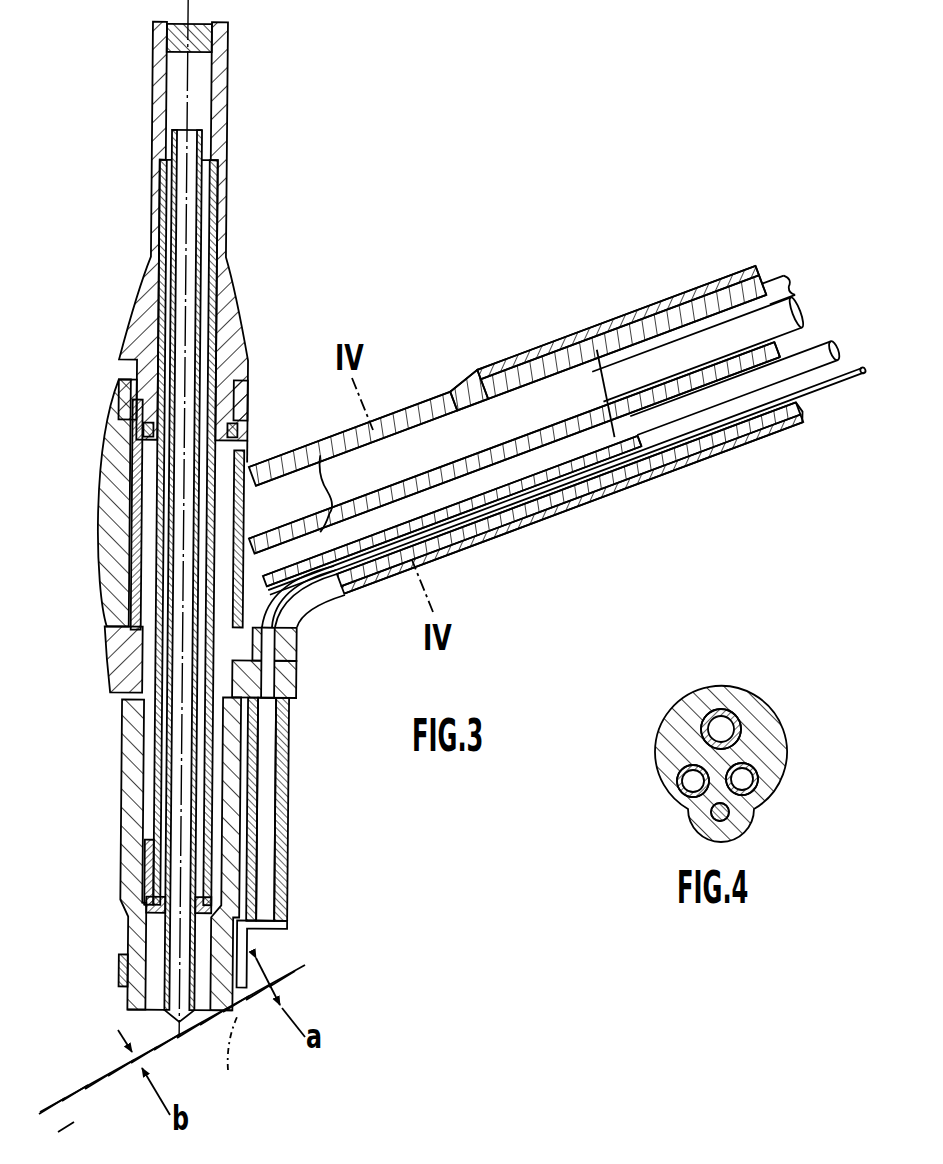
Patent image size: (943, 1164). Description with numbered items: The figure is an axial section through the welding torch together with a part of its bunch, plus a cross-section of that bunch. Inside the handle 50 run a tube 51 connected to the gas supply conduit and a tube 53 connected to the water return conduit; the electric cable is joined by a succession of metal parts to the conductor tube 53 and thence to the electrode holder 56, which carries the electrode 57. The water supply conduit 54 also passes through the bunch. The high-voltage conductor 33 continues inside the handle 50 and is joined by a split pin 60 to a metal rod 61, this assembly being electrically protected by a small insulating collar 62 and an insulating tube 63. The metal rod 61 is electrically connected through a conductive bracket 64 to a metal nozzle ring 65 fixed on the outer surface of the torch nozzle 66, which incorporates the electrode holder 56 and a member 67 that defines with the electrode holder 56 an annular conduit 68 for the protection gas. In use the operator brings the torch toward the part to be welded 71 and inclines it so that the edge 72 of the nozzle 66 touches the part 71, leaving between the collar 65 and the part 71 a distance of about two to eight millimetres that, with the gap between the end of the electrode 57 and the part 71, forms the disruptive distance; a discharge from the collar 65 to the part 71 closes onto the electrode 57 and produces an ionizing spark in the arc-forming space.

In FIG. 3, the high-voltage conductor 33 is at (668, 440).
In FIG. 4, the high-voltage conductor 33 is at (718, 816).
In FIG. 3, the handle 50 is at (635, 480).
In FIG. 3, the tube 51 is at (680, 350).
In FIG. 4, the tube 51 is at (723, 731).
In FIG. 3, the tube 53 is at (665, 417).
In FIG. 4, the tube 53 is at (746, 779).
In FIG. 4, the water supply conduit 54 is at (690, 783).
In FIG. 3, the electrode holder 56 is at (144, 543).
In FIG. 3, the electrode 57 is at (180, 905).
In FIG. 3, the split pin 60 is at (285, 685).
In FIG. 3, the metal rod 61 is at (270, 874).
In FIG. 3, the insulating collar 62 is at (302, 658).
In FIG. 3, the insulating tube 63 is at (295, 802).
In FIG. 3, the conductive bracket 64 is at (273, 935).
In FIG. 3, the metal nozzle ring 65 is at (127, 970).
In FIG. 3, the torch nozzle 66 is at (156, 873).
In FIG. 3, the member 67 is at (150, 778).
In FIG. 3, the annular conduit 68 is at (146, 677).
In FIG. 3, the part to be welded 71 is at (100, 1085).
In FIG. 3, the edge of the nozzle 72 is at (247, 1066).